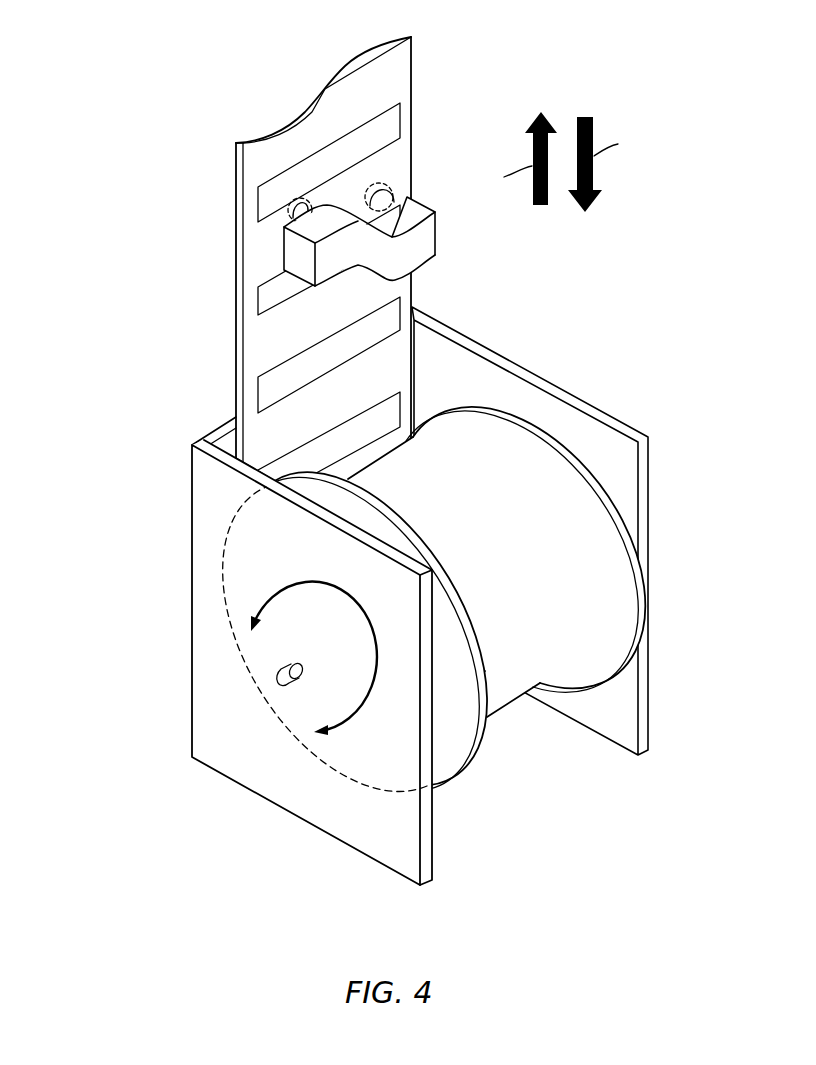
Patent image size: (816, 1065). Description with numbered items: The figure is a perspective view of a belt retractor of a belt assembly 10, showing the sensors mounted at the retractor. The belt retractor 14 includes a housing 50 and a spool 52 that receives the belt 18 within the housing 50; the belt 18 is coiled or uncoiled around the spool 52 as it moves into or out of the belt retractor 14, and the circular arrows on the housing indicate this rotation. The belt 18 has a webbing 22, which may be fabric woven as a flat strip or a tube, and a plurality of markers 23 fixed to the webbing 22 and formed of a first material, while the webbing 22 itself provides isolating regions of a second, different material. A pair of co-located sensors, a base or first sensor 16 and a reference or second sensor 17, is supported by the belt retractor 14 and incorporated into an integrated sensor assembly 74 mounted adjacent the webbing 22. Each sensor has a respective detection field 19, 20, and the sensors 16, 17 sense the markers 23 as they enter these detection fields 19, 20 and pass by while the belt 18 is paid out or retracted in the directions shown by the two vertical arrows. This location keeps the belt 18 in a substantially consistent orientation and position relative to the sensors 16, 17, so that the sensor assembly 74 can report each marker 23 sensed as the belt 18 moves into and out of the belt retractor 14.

The belt assembly 10 is at (392, 447).
The belt retractor 14 is at (392, 596).
The first sensor 16 is at (393, 192).
The second sensor 17 is at (292, 212).
The belt 18 is at (347, 257).
The detection field 19 is at (382, 186).
The detection field 20 is at (299, 197).
The webbing 22 is at (236, 358).
The markers 23 is at (258, 304).
The housing 50 is at (210, 698).
The spool 52 is at (654, 588).
The integrated sensor assembly 74 is at (437, 238).